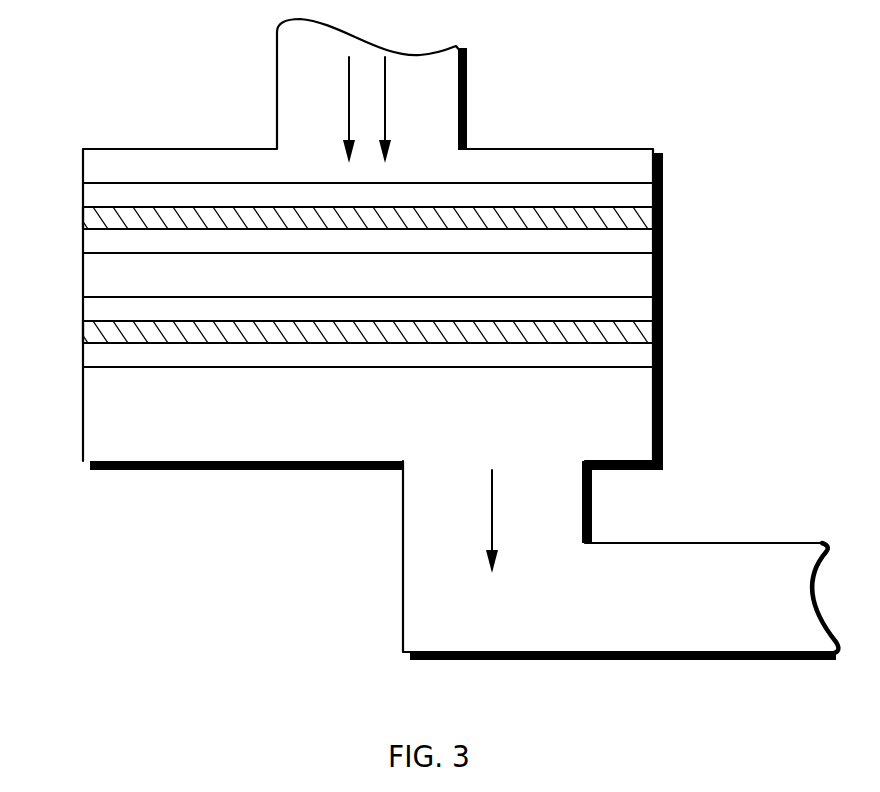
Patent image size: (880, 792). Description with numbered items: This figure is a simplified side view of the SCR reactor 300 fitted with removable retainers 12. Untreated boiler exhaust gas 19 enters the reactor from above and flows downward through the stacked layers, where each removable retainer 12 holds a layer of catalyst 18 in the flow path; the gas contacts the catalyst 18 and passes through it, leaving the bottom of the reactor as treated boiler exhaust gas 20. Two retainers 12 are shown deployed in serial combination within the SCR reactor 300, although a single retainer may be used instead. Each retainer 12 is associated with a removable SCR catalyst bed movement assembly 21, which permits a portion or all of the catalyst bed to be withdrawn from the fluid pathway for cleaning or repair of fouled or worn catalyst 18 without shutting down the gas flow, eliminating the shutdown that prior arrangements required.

The SCR reactor 300 is at (213, 441).
The removable retainer 12 is at (712, 239).
The catalyst 18 is at (90, 222).
The untreated boiler exhaust gas 19 is at (385, 90).
The treated boiler exhaust gas 20 is at (492, 493).
The removable SCR catalyst bed movement assembly 21 is at (665, 257).